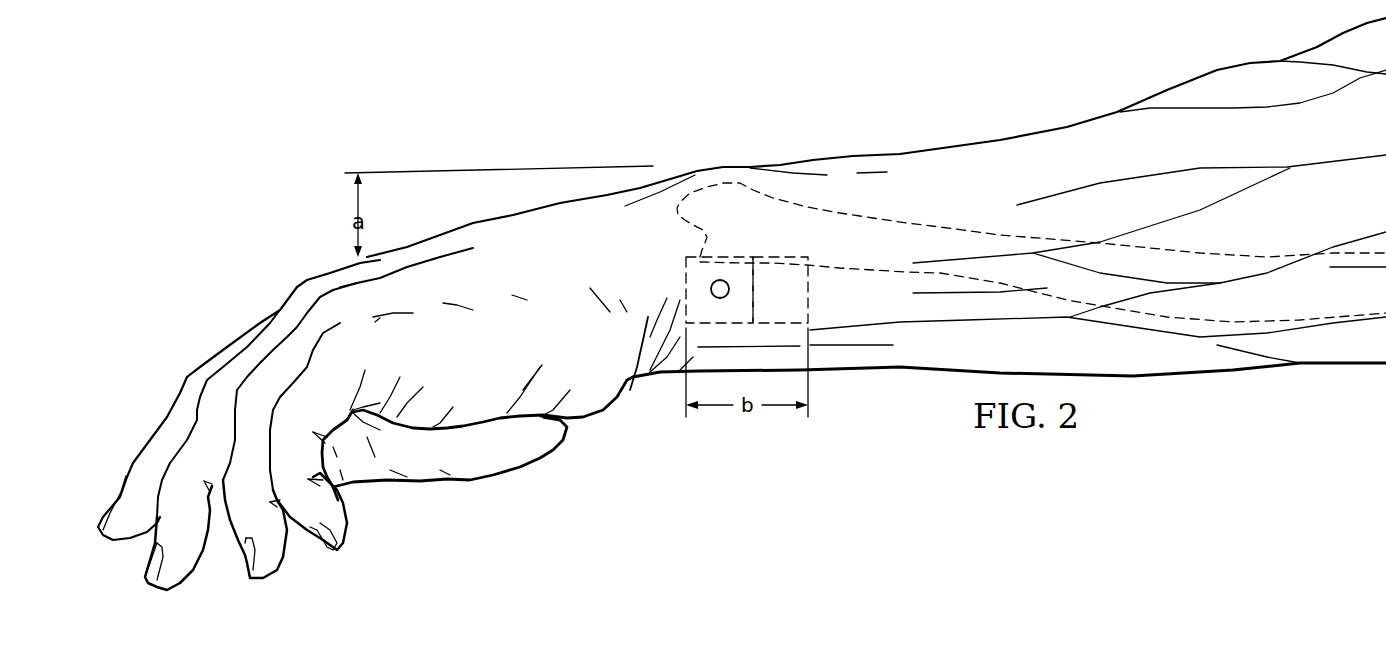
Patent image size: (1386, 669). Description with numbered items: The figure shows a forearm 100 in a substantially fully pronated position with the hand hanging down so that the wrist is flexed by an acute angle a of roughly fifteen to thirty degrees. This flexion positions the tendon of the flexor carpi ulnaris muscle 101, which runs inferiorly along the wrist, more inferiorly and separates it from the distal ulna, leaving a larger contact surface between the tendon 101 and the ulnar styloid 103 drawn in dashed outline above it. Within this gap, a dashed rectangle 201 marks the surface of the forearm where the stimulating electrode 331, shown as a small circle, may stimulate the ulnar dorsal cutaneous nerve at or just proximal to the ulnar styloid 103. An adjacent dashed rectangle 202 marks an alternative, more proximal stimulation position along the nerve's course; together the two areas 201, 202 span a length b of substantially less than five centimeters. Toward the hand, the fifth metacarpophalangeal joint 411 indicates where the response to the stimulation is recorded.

The forearm 100 is at (1222, 400).
The tendon of the flexor carpi ulnaris muscle 101 is at (855, 345).
The ulnar styloid 103 is at (990, 252).
The area 201 is at (686, 291).
The rectangle 202 is at (810, 287).
The stimulating electrode 331 is at (728, 280).
The fifth metacarpophalangeal joint 411 is at (358, 350).